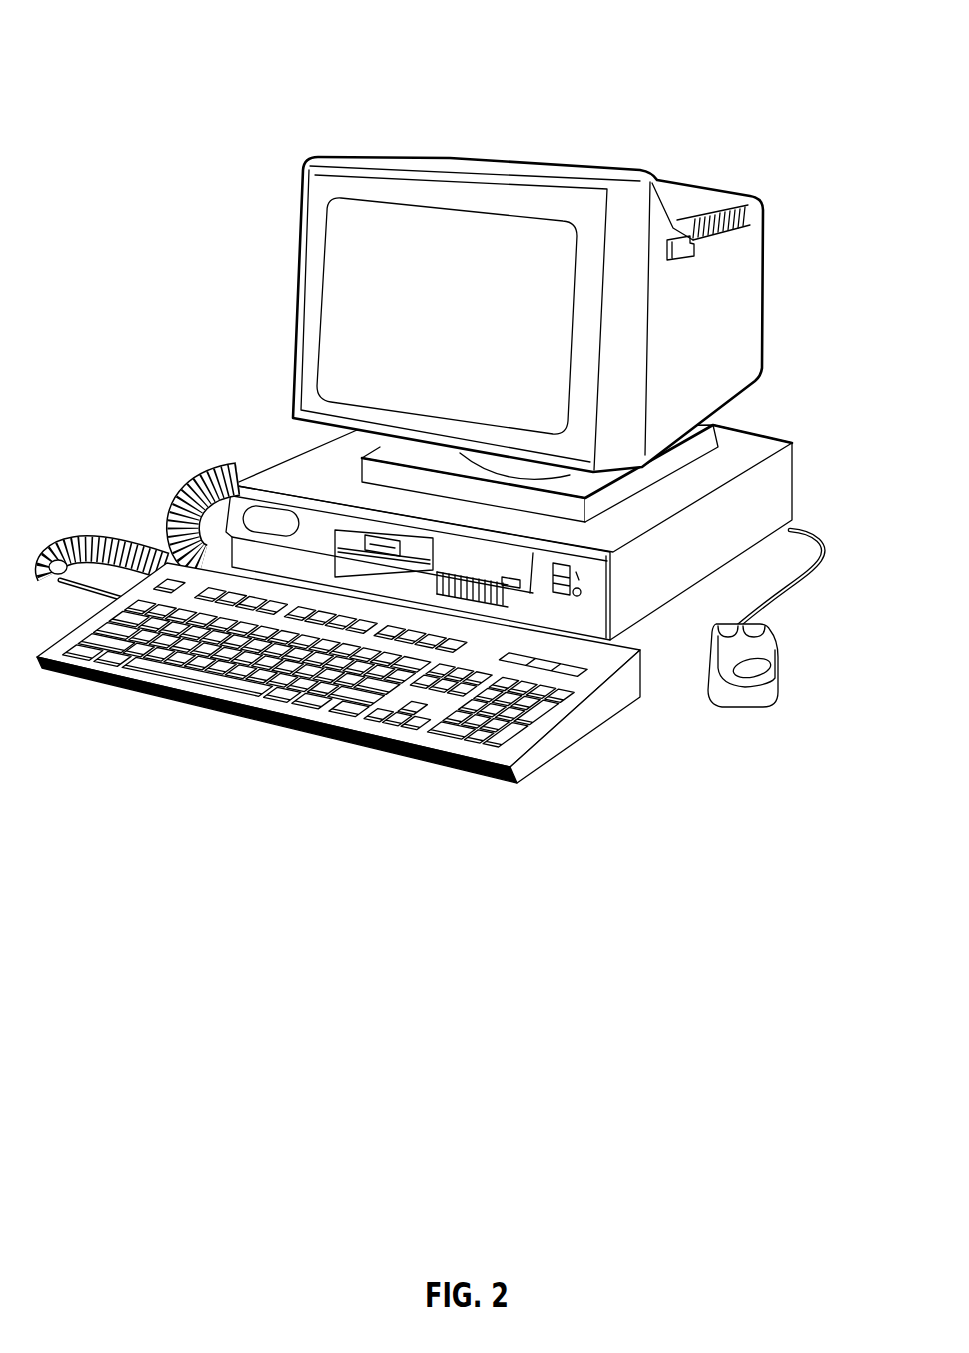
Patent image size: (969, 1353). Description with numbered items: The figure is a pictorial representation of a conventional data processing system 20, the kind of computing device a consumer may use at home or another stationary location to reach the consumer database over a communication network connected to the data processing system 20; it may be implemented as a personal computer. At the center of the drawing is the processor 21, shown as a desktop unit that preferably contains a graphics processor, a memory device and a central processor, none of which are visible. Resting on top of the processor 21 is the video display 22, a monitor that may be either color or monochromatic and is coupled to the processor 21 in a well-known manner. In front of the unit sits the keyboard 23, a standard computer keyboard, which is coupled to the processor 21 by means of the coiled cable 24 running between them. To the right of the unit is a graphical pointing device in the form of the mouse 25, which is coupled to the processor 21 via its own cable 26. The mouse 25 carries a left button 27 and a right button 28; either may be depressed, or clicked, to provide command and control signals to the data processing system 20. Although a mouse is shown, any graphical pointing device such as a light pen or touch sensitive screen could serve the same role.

The data processing system 20 is at (641, 130).
The processor 21 is at (778, 479).
The video display 22 is at (295, 363).
The keyboard 23 is at (333, 742).
The cable 24 is at (187, 490).
The mouse 25 is at (752, 694).
The cable 26 is at (788, 580).
The left button 27 is at (717, 634).
The right button 28 is at (765, 635).